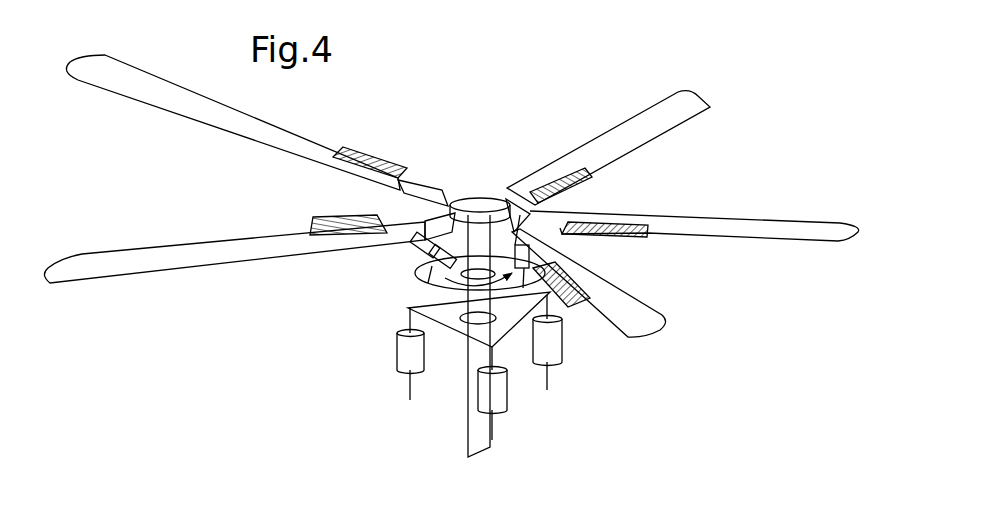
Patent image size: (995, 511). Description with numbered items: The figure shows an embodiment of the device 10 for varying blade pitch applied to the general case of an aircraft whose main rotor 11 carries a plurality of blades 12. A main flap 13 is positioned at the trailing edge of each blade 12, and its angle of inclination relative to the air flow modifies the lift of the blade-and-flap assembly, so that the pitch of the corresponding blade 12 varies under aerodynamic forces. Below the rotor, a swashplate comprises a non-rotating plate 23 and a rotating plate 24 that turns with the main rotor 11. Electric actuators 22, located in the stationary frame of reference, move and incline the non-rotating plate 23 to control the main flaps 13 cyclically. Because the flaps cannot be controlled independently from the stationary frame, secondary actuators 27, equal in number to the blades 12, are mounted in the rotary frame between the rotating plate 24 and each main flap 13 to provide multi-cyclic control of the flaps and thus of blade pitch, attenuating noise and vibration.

The device for varying blade pitch 10 is at (200, 348).
The main rotor 11 is at (460, 137).
The blade 12 is at (667, 115).
The main flap 13 is at (557, 180).
The electric actuator 22 is at (568, 348).
The non-rotating plate 23 is at (452, 326).
The rotating plate 24 is at (445, 297).
The secondary actuator 27 is at (422, 266).